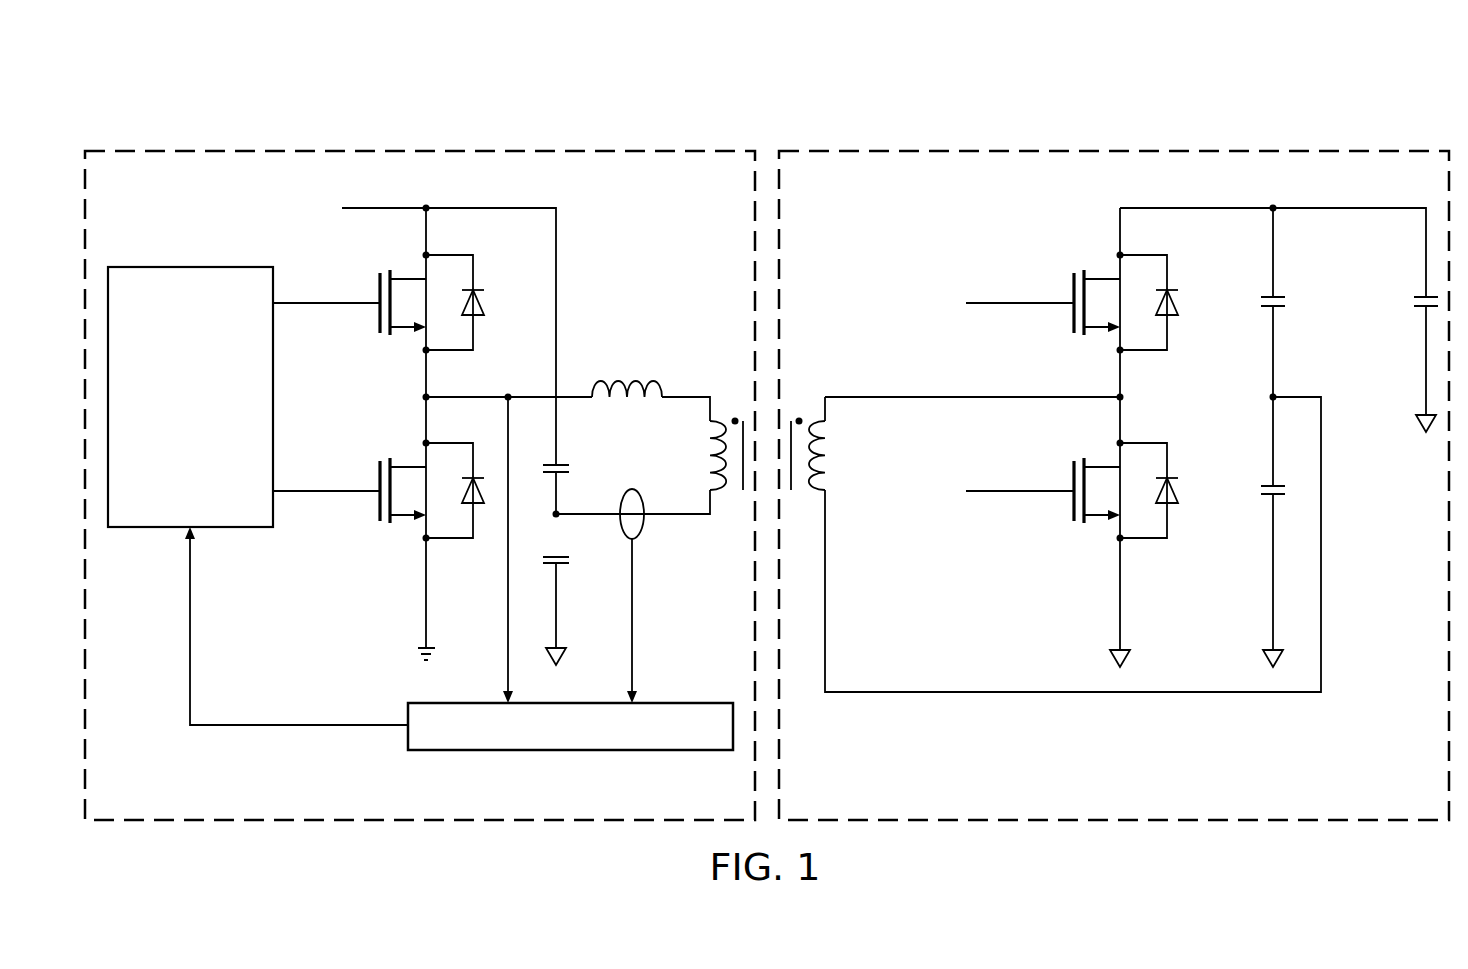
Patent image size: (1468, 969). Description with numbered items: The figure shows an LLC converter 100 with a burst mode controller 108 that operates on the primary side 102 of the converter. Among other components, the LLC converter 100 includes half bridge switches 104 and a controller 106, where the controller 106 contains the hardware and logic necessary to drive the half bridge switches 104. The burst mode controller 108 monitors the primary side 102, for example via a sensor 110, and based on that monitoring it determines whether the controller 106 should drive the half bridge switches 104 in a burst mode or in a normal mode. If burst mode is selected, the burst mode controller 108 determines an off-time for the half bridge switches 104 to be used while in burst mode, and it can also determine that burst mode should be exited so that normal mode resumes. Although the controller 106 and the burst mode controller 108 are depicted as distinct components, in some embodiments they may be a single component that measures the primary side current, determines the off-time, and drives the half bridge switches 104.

The LLC converter 100 is at (375, 78).
The primary side 102 is at (293, 148).
The half bridge switches 104 is at (376, 290).
The controller 106 is at (168, 430).
The burst mode controller 108 is at (408, 740).
The sensor 110 is at (632, 489).